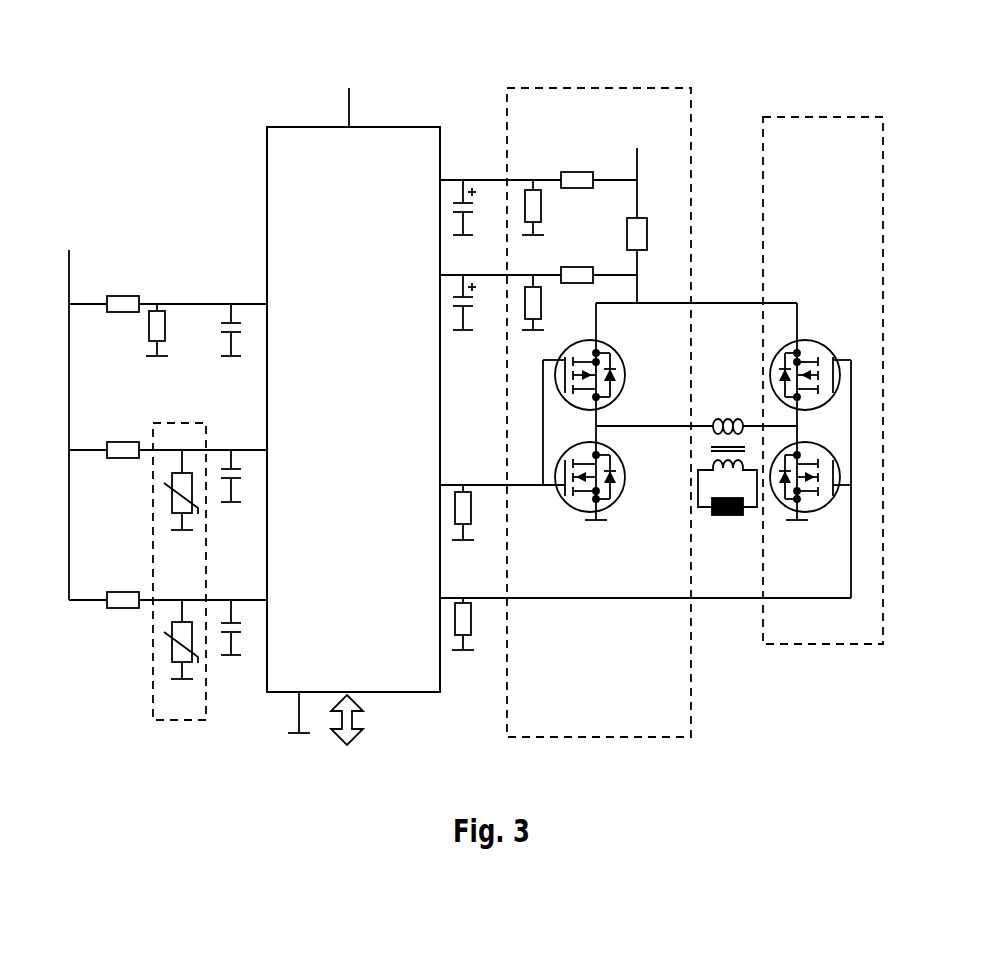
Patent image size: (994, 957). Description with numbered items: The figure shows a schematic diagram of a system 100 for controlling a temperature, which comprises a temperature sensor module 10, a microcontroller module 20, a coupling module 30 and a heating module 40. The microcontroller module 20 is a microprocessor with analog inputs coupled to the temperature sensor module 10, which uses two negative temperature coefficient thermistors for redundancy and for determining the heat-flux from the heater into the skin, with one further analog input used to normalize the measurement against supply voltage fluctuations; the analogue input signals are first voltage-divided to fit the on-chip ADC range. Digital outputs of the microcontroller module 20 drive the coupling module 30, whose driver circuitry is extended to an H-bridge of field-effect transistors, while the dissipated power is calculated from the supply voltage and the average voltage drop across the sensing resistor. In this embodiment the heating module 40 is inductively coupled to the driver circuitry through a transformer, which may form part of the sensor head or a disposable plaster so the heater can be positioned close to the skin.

The system for controlling a temperature 100 is at (196, 190).
The temperature sensor module 10 is at (169, 428).
The microcontroller module 20 is at (404, 134).
The coupling module 30 is at (558, 100).
The heating module 40 is at (735, 516).